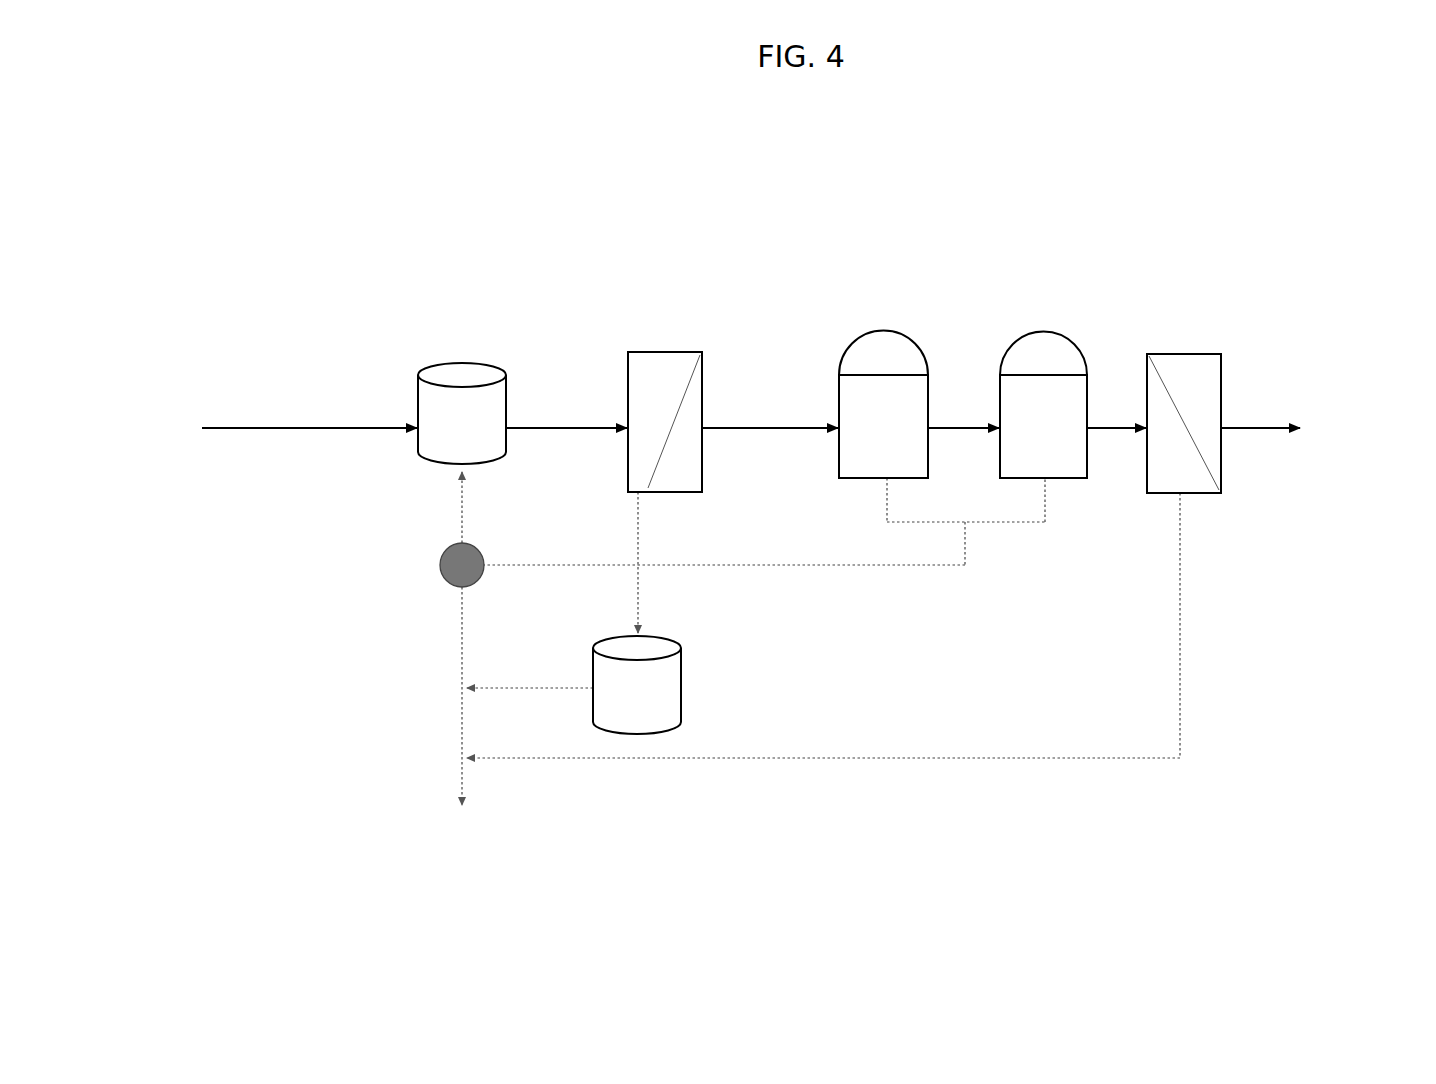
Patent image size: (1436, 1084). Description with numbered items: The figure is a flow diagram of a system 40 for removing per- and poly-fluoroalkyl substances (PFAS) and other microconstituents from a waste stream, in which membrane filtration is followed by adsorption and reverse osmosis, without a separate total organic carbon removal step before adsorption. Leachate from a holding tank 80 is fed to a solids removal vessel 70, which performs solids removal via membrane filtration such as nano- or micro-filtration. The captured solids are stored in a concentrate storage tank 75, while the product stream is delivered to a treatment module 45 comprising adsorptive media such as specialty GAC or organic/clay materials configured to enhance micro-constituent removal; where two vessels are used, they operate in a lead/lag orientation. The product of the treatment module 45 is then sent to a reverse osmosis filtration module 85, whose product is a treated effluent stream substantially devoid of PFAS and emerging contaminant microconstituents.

The system 40 is at (316, 222).
The holding tank 80 is at (487, 470).
The solids removal vessel 70 is at (657, 495).
The treatment module 45 is at (905, 483).
The reverse osmosis filtration module 85 is at (1161, 495).
The concentrate storage tank 75 is at (643, 743).